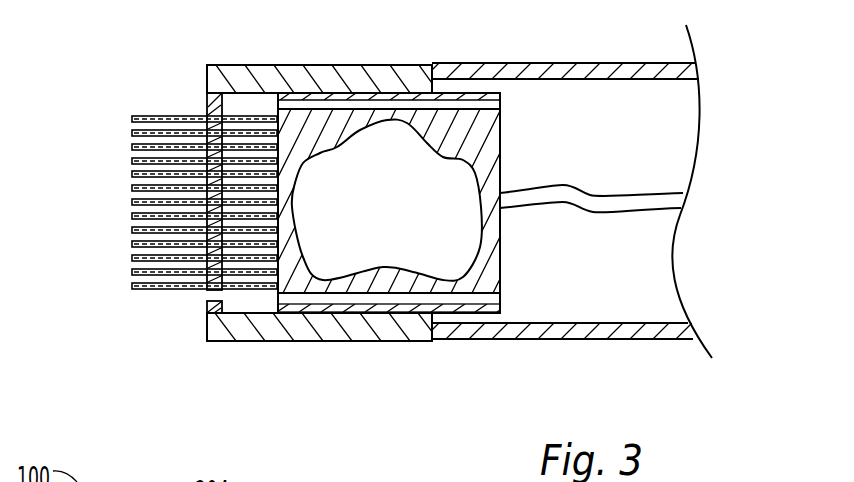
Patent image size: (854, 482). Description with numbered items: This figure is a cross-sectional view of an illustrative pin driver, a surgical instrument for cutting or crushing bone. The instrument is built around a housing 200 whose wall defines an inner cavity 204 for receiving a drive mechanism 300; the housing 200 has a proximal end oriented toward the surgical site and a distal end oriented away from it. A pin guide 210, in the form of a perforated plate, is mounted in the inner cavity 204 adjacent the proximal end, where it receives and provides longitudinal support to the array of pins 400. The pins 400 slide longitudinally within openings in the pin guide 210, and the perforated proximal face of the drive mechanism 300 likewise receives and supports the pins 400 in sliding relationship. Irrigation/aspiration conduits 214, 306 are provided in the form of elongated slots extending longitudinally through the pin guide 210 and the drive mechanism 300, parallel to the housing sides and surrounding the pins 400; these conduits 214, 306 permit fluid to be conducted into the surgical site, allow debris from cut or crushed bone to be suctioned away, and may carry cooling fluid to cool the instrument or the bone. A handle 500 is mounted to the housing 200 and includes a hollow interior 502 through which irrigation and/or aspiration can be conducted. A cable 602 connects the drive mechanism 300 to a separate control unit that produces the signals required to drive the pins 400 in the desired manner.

The housing 200 is at (388, 341).
The inner cavity 204 is at (242, 92).
The pin guide 210 is at (207, 96).
The irrigation/aspiration conduit 214 is at (208, 301).
The drive mechanism 300 is at (500, 257).
The irrigation/aspiration conduit 306 is at (320, 305).
The array of pins 400 is at (104, 260).
The handle 500 is at (650, 339).
The hollow interior 502 is at (601, 169).
The cable 602 is at (672, 198).